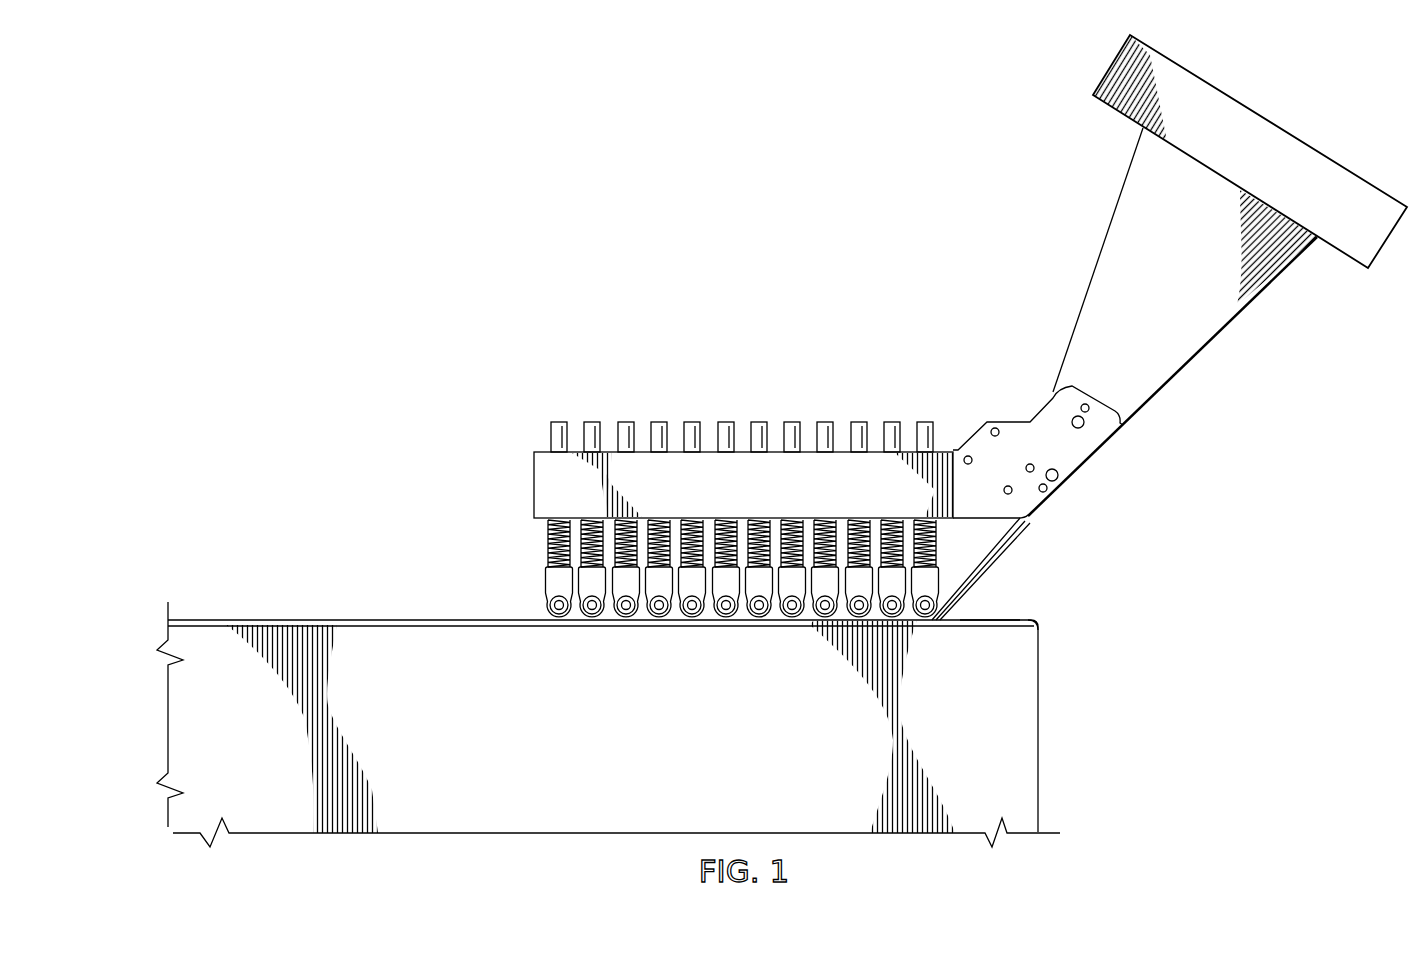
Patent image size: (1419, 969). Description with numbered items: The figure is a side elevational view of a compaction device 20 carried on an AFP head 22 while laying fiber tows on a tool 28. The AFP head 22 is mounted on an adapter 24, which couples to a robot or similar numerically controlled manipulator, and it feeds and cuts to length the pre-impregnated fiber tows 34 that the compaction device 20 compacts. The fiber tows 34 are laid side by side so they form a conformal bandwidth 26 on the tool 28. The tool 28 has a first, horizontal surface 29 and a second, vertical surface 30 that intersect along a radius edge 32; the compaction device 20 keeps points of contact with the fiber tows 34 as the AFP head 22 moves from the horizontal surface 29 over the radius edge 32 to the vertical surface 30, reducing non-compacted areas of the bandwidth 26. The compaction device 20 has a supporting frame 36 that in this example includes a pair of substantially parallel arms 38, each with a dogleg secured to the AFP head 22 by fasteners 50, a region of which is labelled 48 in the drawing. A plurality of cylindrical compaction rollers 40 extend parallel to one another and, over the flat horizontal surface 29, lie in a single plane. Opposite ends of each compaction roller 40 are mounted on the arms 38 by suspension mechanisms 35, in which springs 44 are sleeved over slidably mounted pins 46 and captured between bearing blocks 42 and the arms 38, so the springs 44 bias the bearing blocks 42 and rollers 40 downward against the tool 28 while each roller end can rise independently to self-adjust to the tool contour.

The compaction device 20 is at (690, 292).
The AFP head 22 is at (1215, 338).
The adapter 24 is at (1268, 119).
The conformal bandwidth 26 is at (383, 619).
The tool 28 is at (1028, 777).
The horizontal surface 29 is at (990, 617).
The vertical surface 30 is at (1042, 730).
The radius edge 32 is at (1042, 618).
The fiber tows 34 is at (1008, 546).
The suspension mechanisms 35 is at (525, 547).
The supporting frame 36 is at (503, 477).
The arms 38 is at (534, 472).
The compaction rollers 40 is at (548, 607).
The bearing blocks 42 is at (546, 580).
The springs 44 is at (548, 535).
The pins 46 is at (624, 421).
The mounting tab 48 is at (1020, 435).
The fasteners 50 is at (1082, 425).